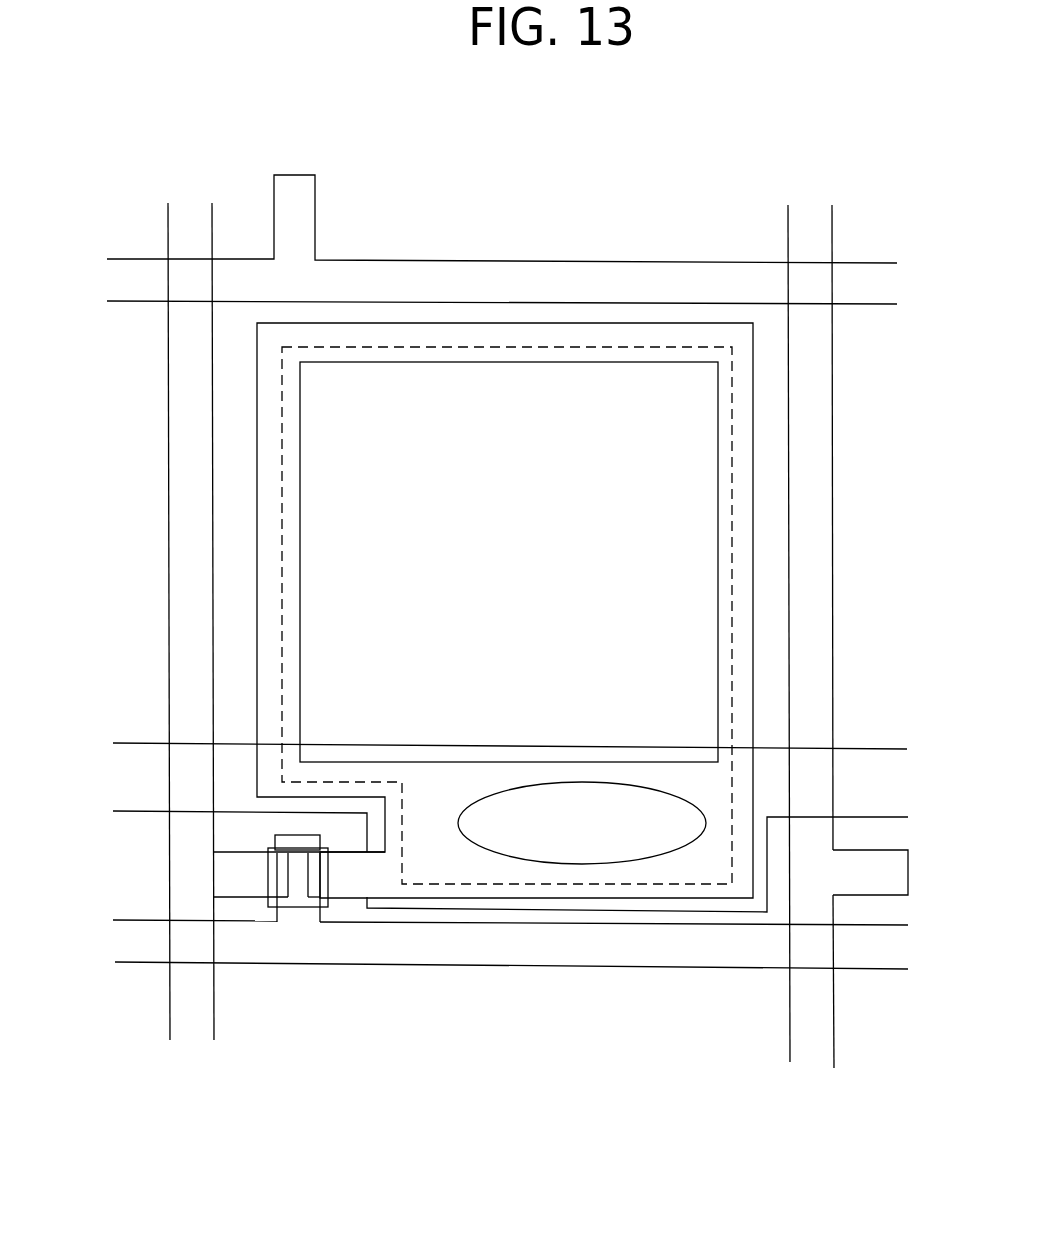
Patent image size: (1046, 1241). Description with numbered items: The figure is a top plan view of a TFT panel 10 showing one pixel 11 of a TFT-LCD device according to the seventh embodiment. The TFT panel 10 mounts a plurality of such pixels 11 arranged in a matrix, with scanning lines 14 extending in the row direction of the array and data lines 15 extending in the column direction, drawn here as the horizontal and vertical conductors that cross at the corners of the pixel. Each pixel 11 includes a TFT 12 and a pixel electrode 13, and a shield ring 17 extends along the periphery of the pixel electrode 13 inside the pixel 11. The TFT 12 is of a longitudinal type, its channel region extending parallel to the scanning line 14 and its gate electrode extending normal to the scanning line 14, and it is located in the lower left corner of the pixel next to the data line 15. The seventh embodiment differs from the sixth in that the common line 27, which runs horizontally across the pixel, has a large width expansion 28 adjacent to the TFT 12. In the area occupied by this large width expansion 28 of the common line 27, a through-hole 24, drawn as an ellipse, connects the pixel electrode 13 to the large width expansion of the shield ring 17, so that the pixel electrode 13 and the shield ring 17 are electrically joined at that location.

The TFT panel 10 is at (706, 148).
The pixel 11 is at (590, 252).
The TFT 12 is at (292, 917).
The pixel electrode 13 is at (734, 434).
The scanning line 14 is at (865, 263).
The data line 15 is at (168, 232).
The shield ring 17 is at (755, 507).
The through-hole 24 is at (580, 866).
The common line 27 is at (862, 748).
The large width expansion 28 is at (364, 870).